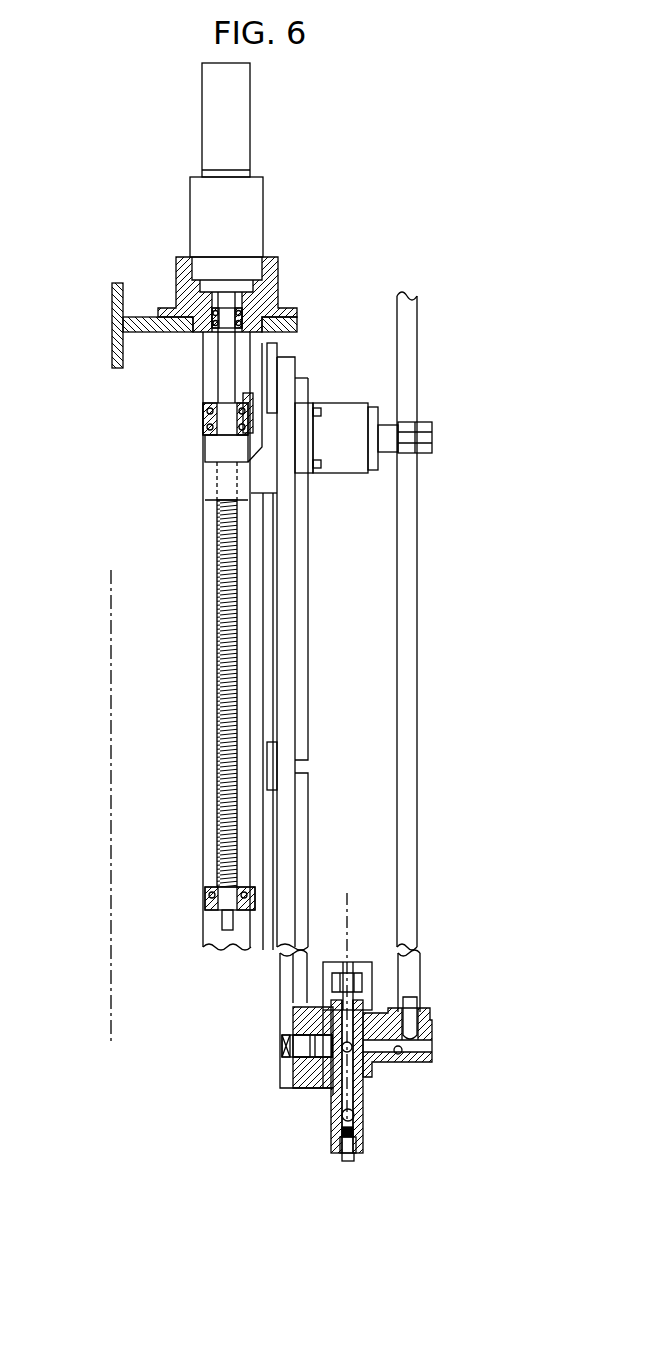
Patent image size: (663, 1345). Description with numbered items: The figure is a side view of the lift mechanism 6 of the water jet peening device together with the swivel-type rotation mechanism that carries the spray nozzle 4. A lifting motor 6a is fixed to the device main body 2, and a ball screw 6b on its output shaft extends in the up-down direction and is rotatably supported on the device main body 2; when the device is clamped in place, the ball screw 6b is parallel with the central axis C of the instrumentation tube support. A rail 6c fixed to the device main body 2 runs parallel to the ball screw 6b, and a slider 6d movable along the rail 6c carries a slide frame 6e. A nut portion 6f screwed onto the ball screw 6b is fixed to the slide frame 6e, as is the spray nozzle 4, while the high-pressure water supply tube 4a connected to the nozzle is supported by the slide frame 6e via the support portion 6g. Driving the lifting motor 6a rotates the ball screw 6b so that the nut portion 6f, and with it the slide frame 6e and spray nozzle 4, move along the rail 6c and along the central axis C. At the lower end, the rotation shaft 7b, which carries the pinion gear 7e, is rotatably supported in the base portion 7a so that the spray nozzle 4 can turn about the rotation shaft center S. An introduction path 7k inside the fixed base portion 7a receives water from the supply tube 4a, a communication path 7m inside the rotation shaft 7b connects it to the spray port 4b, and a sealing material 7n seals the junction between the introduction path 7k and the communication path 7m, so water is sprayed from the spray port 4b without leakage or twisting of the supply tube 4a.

The device main body 2 is at (123, 345).
The spray nozzle 4 is at (364, 1128).
The high-pressure water supply tube 4a is at (408, 690).
The spray port 4b is at (348, 1162).
The lift mechanism 6 is at (318, 287).
The lifting motor 6a is at (252, 213).
The ball screw 6b is at (217, 575).
The rail 6c is at (270, 623).
The slider 6d is at (273, 372).
The slide frame 6e is at (290, 537).
The nut portion 6f is at (207, 479).
The support portion 6g is at (342, 413).
The base portion 7a is at (318, 1084).
The rotation shaft 7b is at (293, 1025).
The pinion gear 7e is at (352, 975).
The introduction path 7k is at (396, 1060).
The communication path 7m is at (353, 1098).
The sealing material 7n is at (297, 1072).
The central axis C is at (100, 655).
The rotation shaft center S is at (337, 995).